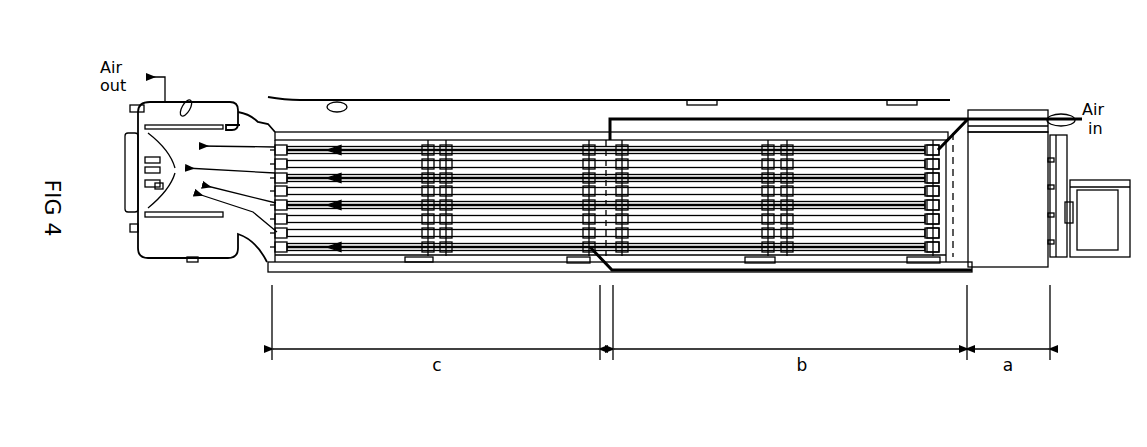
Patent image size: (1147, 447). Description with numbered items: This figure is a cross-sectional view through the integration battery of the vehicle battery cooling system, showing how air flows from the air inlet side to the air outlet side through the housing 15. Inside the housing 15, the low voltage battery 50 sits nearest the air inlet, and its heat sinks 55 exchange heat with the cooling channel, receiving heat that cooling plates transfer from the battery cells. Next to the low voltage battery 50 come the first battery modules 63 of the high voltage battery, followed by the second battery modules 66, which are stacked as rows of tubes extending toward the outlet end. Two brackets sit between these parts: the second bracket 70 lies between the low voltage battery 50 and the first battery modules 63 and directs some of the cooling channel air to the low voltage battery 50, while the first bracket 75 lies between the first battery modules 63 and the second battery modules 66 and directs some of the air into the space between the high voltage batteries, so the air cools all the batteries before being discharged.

The housing 15 is at (368, 100).
The second battery modules 66 is at (473, 138).
The first bracket 75 is at (610, 133).
The first battery modules 63 is at (818, 143).
The second bracket 70 is at (947, 138).
The low voltage battery 50 is at (993, 167).
The heat sinks 55 is at (1017, 117).